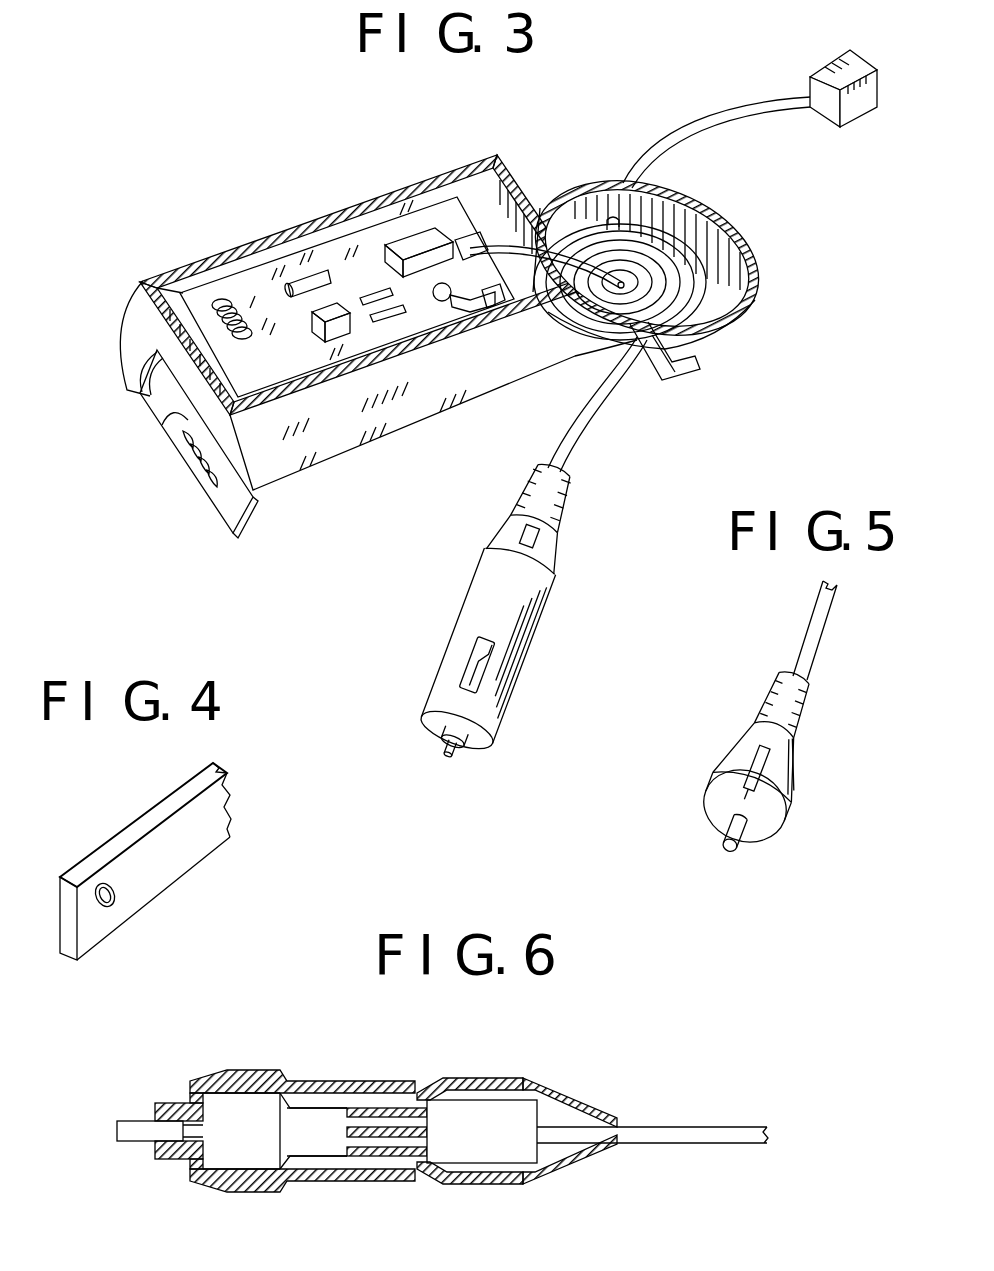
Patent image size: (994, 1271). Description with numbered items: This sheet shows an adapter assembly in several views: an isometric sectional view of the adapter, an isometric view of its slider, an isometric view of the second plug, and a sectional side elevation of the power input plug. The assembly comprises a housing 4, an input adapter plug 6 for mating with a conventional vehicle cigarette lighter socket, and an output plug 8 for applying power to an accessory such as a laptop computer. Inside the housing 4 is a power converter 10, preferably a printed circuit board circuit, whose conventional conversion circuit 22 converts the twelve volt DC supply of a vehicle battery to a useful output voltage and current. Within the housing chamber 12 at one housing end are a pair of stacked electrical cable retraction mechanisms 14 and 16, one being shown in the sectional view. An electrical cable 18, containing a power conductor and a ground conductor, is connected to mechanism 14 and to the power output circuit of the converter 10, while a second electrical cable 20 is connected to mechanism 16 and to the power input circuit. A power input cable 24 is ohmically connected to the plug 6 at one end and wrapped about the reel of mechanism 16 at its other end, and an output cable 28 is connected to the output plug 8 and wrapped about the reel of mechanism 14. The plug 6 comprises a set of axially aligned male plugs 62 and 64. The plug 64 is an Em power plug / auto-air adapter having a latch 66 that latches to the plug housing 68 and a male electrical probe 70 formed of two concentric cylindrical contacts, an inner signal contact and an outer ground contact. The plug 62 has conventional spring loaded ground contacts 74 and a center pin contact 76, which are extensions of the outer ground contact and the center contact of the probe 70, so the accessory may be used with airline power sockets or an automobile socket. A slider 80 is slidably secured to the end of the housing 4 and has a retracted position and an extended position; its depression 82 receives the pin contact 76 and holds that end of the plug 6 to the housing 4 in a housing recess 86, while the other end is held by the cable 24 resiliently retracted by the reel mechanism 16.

In FIG. 3, the housing 4 is at (341, 322).
In FIG. 3, the input adapter plug 6 is at (483, 628).
In FIG. 6, the input adapter plug 6 is at (417, 1123).
In FIG. 3, the output plug 8 is at (845, 72).
In FIG. 3, the power converter 10 is at (375, 230).
In FIG. 3, the housing chamber 12 is at (680, 267).
In FIG. 3, the electrical cable retraction mechanism 14 is at (713, 247).
In FIG. 3, the electrical cable retraction mechanism 16 is at (755, 297).
In FIG. 3, the electrical cable 18 is at (538, 205).
In FIG. 3, the second electrical cable 20 is at (522, 317).
In FIG. 5, the second electrical cable 20 is at (817, 643).
In FIG. 6, the second electrical cable 20 is at (652, 1135).
In FIG. 3, the conversion circuit 22 is at (163, 313).
In FIG. 3, the power input cable 24 is at (580, 417).
In FIG. 3, the output cable 28 is at (745, 107).
In FIG. 3, the male plug 62 is at (488, 649).
In FIG. 5, the male plug 62 is at (766, 726).
In FIG. 6, the male plug 62 is at (228, 1062).
In FIG. 3, the male plug 64 is at (512, 540).
In FIG. 5, the male plug 64 is at (784, 702).
In FIG. 6, the male plug 64 is at (592, 1095).
In FIG. 3, the latch 66 is at (528, 540).
In FIG. 5, the latch 66 is at (755, 773).
In FIG. 6, the latch 66 is at (535, 1047).
In FIG. 3, the plug housing 68 is at (477, 664).
In FIG. 6, the plug housing 68 is at (372, 1080).
In FIG. 5, the male electrical probe 70 is at (734, 833).
In FIG. 3, the spring loaded ground contacts 74 is at (480, 665).
In FIG. 6, the spring loaded ground contacts 74 is at (262, 1070).
In FIG. 3, the center pin contact 76 is at (452, 743).
In FIG. 6, the center pin contact 76 is at (130, 1128).
In FIG. 3, the slider 80 is at (227, 503).
In FIG. 4, the slider 80 is at (119, 861).
In FIG. 4, the depression 82 is at (117, 891).
In FIG. 3, the housing recess 86 is at (145, 392).